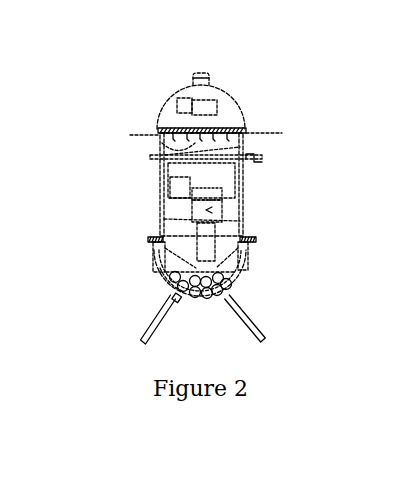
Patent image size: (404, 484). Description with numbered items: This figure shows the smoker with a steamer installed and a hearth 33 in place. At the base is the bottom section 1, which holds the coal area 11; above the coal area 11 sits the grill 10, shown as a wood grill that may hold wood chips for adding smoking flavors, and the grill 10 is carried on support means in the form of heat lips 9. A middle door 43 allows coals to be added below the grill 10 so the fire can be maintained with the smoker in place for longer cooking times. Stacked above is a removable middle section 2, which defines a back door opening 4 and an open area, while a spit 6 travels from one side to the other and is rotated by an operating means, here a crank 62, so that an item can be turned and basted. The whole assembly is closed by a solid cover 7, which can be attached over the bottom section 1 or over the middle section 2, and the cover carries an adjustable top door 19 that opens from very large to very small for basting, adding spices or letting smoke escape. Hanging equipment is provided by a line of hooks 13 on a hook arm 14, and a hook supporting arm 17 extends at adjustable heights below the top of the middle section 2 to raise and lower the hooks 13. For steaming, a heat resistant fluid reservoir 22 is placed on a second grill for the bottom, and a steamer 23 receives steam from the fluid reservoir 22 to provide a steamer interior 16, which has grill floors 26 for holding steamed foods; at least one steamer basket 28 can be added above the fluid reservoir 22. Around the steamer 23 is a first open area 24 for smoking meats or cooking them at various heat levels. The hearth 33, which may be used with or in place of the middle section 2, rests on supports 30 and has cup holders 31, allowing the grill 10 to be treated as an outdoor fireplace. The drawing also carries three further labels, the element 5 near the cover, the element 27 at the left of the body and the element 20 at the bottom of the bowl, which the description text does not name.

The bottom section 1 is at (253, 258).
The middle section 2 is at (243, 222).
The back door opening 4 is at (172, 193).
The upper plate end 5 is at (246, 133).
The spit 6 is at (240, 148).
The solid cover 7 is at (238, 92).
The heat lips 9 is at (153, 257).
The grill 10 is at (247, 268).
The coal area 11 is at (234, 291).
The hooks 13 is at (180, 140).
The hook arm 14 is at (158, 130).
The steamer interior 16 is at (243, 221).
The hook supporting arm 17 is at (130, 136).
The top door 19 is at (207, 107).
The balls 20 is at (201, 296).
The fluid reservoir 22 is at (153, 268).
The steamer 23 is at (164, 219).
The first open area 24 is at (165, 272).
The grill floors 26 is at (243, 221).
The second plate 27 is at (150, 157).
The steamer basket 28 is at (240, 205).
The supports 30 is at (251, 242).
The cup holders 31 is at (148, 238).
The hearth 33 is at (256, 243).
The middle door 43 is at (150, 282).
The crank 62 is at (262, 162).